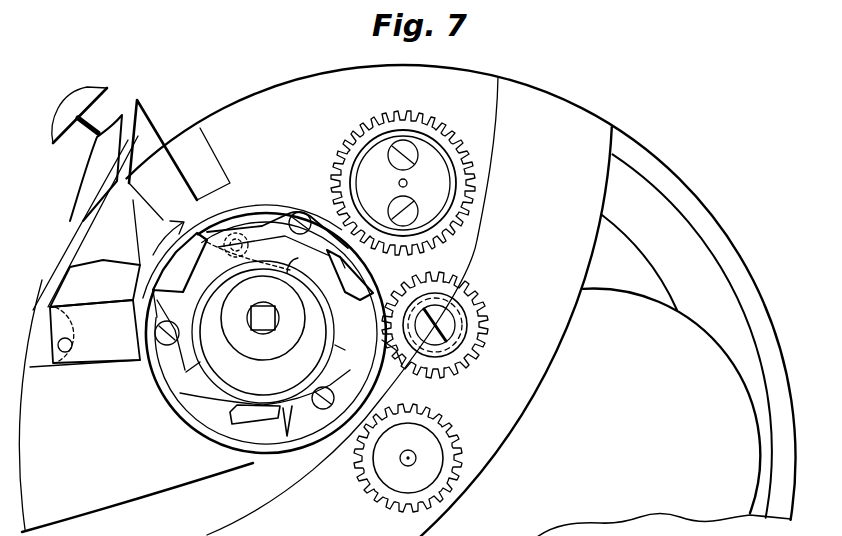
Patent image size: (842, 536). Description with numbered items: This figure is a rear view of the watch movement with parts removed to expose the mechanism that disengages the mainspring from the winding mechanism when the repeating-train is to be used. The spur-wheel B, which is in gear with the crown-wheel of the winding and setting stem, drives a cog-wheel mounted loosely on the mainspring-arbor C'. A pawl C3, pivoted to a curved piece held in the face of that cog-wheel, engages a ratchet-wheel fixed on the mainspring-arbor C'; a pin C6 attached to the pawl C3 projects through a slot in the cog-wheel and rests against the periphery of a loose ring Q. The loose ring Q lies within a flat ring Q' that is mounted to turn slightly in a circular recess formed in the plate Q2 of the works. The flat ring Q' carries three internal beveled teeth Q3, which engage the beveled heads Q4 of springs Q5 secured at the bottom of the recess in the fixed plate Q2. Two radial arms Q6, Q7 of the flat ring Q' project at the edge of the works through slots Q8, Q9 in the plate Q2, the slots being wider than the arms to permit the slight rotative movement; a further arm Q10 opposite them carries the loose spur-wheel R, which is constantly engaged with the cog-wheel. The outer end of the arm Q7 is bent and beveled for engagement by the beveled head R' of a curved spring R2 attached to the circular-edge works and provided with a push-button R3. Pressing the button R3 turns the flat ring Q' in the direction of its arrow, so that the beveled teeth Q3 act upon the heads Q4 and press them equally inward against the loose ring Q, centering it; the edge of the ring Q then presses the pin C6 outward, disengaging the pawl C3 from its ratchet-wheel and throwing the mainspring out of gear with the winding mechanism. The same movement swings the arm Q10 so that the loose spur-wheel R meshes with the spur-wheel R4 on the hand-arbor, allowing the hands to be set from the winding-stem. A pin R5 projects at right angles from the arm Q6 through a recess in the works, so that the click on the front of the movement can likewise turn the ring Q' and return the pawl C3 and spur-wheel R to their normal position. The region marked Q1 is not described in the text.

The loose spur-wheel R is at (442, 325).
The beveled head R' is at (96, 168).
The curved spring R2 is at (53, 273).
The push-button R3 is at (82, 97).
The spur-wheel on the hand-arbor R4 is at (416, 459).
The pin R5 is at (58, 345).
The loose ring Q is at (251, 310).
The flat ring Q' is at (264, 305).
The crescent plate Q1 is at (258, 306).
The plate of the works Q2 is at (287, 318).
The internal beveled teeth Q3 is at (288, 420).
The beveled heads Q4 is at (343, 272).
The springs Q5 is at (278, 317).
The radial arm Q6 is at (95, 331).
The radial arm Q7 is at (163, 160).
The slot Q8 is at (95, 253).
The slot Q9 is at (209, 164).
The arm of the ring Q10 is at (420, 310).
The spur-wheel B is at (410, 186).
The mainspring-arbor C' is at (272, 319).
The pawl C3 is at (248, 251).
The pin C6 is at (293, 273).